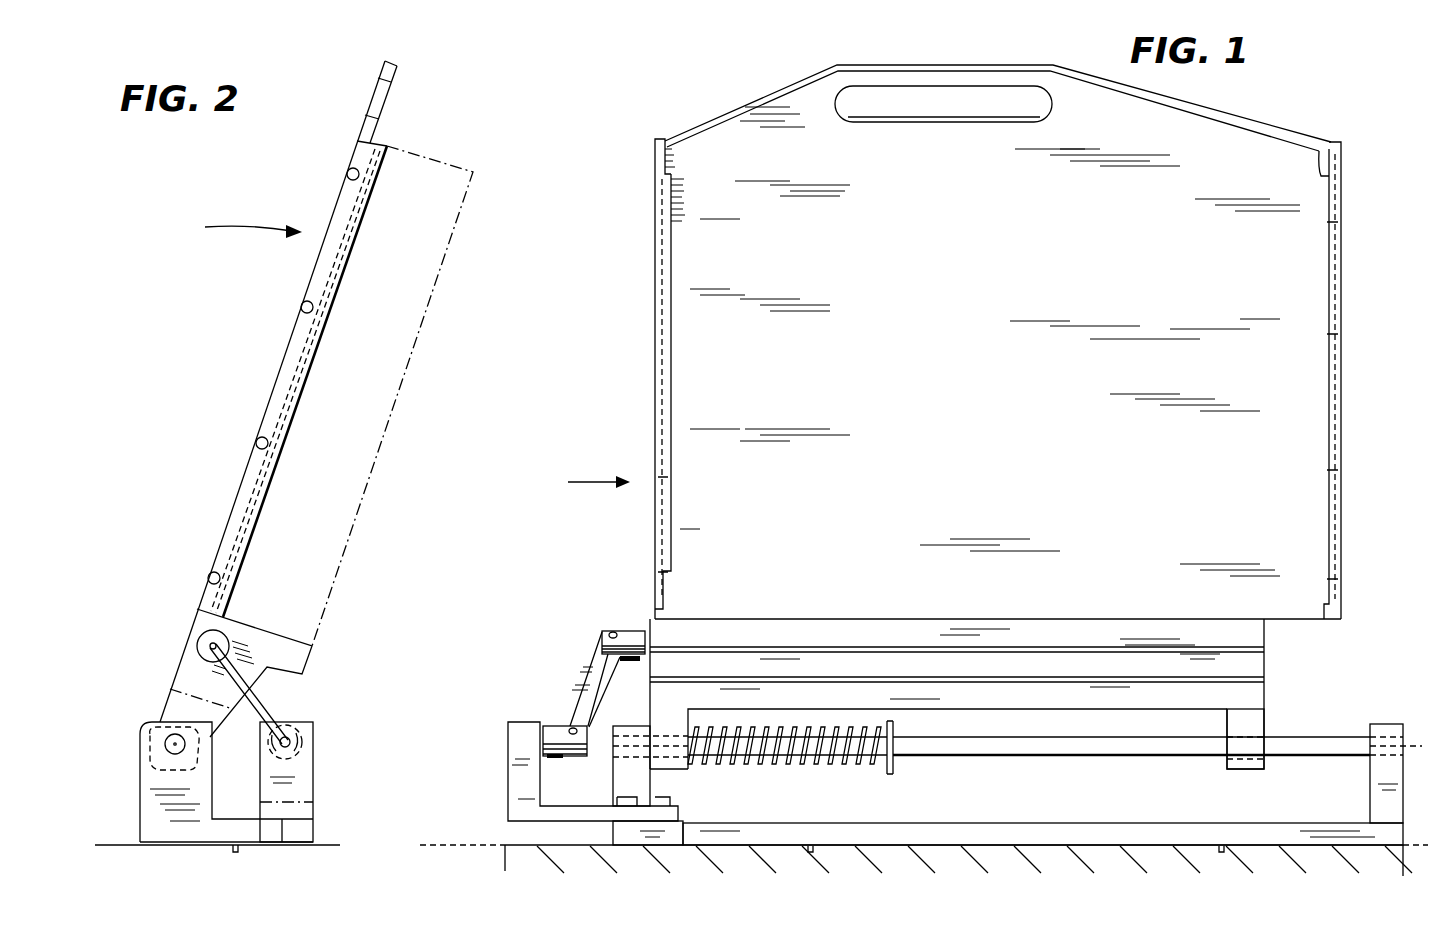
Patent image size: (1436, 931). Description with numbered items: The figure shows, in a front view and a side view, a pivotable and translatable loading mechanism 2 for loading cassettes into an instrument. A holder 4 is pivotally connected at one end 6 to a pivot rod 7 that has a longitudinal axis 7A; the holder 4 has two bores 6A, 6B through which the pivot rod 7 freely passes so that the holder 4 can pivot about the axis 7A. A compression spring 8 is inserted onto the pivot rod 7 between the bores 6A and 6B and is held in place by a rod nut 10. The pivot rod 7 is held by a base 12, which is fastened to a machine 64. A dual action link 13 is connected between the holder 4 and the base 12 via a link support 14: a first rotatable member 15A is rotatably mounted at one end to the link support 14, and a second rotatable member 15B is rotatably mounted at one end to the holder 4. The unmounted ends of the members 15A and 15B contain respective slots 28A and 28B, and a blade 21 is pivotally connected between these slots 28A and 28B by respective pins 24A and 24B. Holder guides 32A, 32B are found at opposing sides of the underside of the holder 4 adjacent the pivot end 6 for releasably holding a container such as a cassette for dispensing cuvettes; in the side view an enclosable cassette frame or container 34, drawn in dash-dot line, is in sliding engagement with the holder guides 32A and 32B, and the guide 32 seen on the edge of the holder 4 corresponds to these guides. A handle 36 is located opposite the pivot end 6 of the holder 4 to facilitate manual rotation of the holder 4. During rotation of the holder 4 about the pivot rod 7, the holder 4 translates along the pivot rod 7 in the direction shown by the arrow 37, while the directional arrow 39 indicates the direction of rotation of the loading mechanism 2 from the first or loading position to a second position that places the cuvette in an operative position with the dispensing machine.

In FIG. 2, the loading mechanism 2 is at (297, 391).
In FIG. 1, the loading mechanism 2 is at (981, 342).
In FIG. 2, the holder 4 is at (266, 409).
In FIG. 1, the holder 4 is at (655, 331).
In FIG. 1, the pivot end 6 is at (1253, 709).
In FIG. 1, the bore 6A is at (1255, 738).
In FIG. 1, the bore 6B is at (660, 733).
In FIG. 1, the pivot rod 7 is at (1090, 752).
In FIG. 1, the longitudinal axis 7A is at (1422, 745).
In FIG. 1, the compression spring 8 is at (843, 767).
In FIG. 1, the rod nut 10 is at (896, 732).
In FIG. 2, the base 12 is at (201, 820).
In FIG. 1, the base 12 is at (1130, 836).
In FIG. 2, the dual action link 13 is at (296, 700).
In FIG. 1, the dual action link 13 is at (561, 676).
In FIG. 2, the link support 14 is at (313, 791).
In FIG. 1, the link support 14 is at (508, 781).
In FIG. 2, the first rotatable member 15A is at (305, 743).
In FIG. 1, the first rotatable member 15A is at (548, 727).
In FIG. 2, the second rotatable member 15B is at (200, 648).
In FIG. 1, the second rotatable member 15B is at (633, 632).
In FIG. 2, the blade 21 is at (290, 722).
In FIG. 1, the blade 21 is at (592, 664).
In FIG. 1, the pin 24A is at (571, 729).
In FIG. 1, the pin 24B is at (611, 634).
In FIG. 1, the slot 28A is at (574, 759).
In FIG. 1, the slot 28B is at (627, 664).
In FIG. 2, the edge frame member 32 is at (372, 142).
In FIG. 1, the holder guide 32A is at (677, 191).
In FIG. 1, the holder guide 32B is at (1317, 160).
In FIG. 2, the cassette frame or container 34 is at (436, 152).
In FIG. 1, the handle 36 is at (957, 98).
In FIG. 1, the arrow 37 is at (585, 478).
In FIG. 2, the directional arrow 39 is at (246, 225).
In FIG. 1, the machine 64 is at (1206, 875).